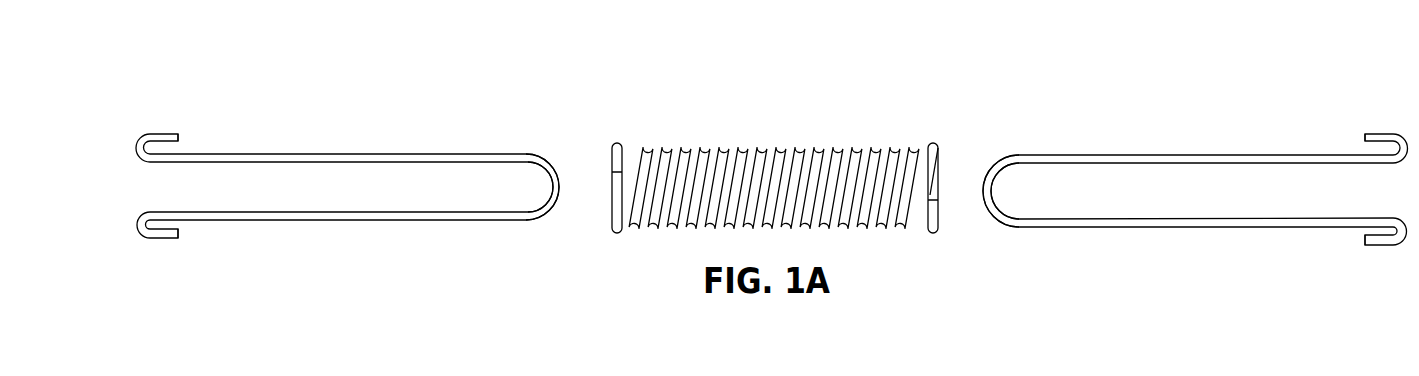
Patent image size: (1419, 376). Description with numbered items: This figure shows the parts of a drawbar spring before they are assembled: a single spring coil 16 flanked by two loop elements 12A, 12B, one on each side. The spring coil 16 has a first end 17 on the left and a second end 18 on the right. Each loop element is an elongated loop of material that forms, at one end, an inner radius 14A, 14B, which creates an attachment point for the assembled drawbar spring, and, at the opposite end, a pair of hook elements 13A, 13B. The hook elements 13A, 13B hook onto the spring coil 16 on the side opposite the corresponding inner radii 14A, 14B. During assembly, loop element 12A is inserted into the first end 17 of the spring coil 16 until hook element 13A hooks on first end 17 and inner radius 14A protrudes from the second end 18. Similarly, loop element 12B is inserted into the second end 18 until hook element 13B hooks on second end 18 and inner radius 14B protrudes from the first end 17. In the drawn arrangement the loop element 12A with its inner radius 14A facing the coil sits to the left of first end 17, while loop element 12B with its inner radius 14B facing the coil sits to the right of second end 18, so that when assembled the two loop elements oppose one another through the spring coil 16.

The loop element 12A is at (335, 108).
The loop element 12B is at (1218, 105).
The hook element 13A is at (178, 141).
The hook element 13B is at (1378, 139).
The inner radius 14A is at (551, 168).
The inner radius 14B is at (993, 175).
The spring coil 16 is at (698, 113).
The first end 17 is at (610, 160).
The second end 18 is at (943, 172).